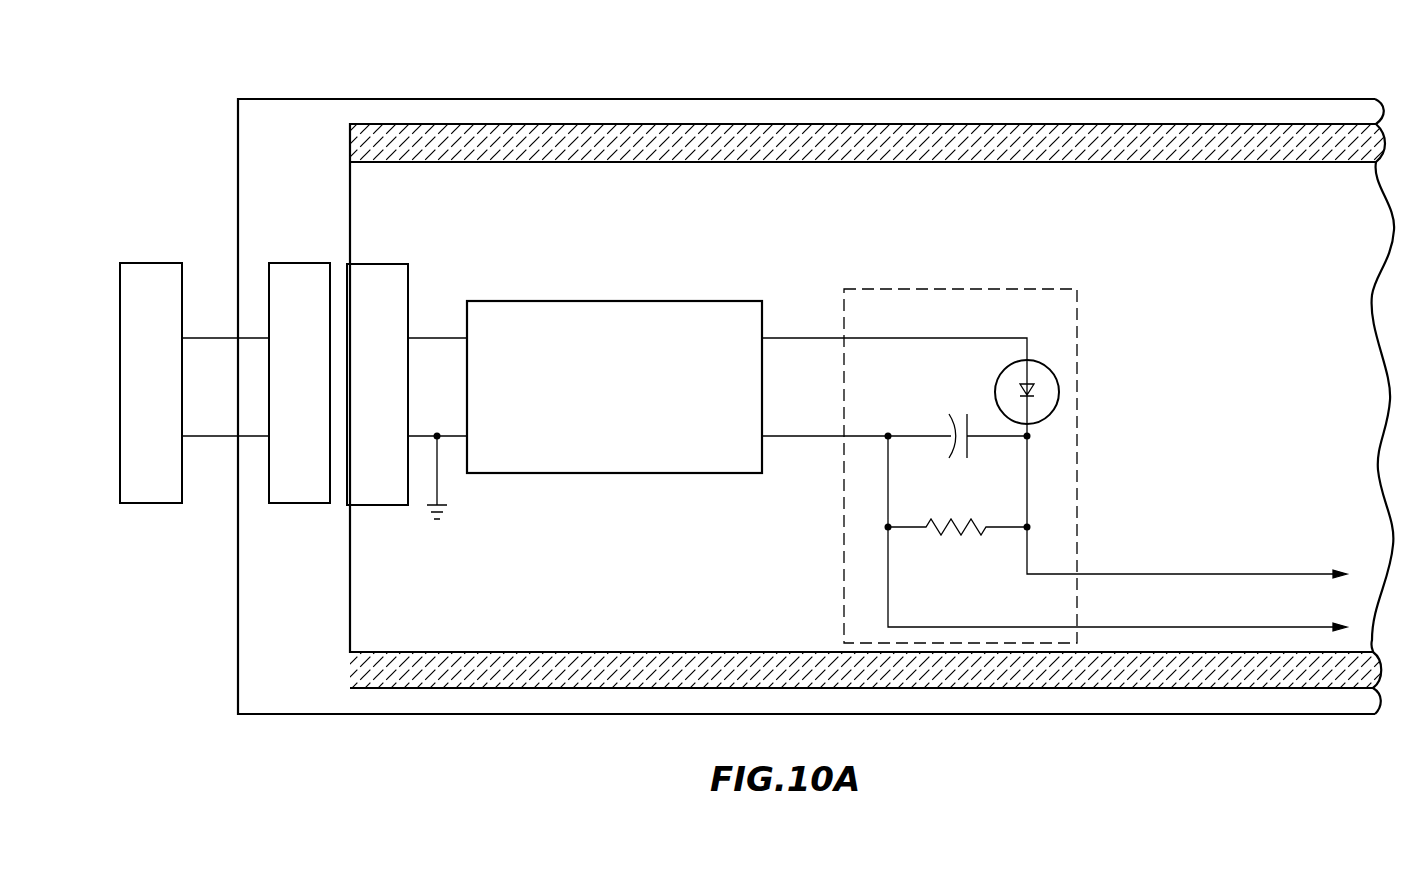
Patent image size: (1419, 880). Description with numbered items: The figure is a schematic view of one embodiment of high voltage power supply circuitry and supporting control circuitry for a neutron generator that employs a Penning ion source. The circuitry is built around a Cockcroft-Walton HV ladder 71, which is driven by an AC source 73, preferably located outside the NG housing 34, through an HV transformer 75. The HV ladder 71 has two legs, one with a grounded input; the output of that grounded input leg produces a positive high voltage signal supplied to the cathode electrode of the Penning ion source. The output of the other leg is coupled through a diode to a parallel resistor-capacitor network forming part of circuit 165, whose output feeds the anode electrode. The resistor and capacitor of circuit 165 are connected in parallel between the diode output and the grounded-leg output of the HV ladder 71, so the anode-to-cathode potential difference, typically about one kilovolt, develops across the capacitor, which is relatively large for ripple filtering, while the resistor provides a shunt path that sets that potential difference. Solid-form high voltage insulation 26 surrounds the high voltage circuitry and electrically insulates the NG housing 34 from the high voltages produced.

The NG housing 34 is at (910, 99).
The solid-form high voltage insulation 26 is at (1094, 162).
The AC source 73 is at (163, 263).
The HV transformer 75 is at (332, 528).
The Cockcroft-Walton HV ladder 71 is at (677, 474).
The circuit 165 is at (1077, 320).